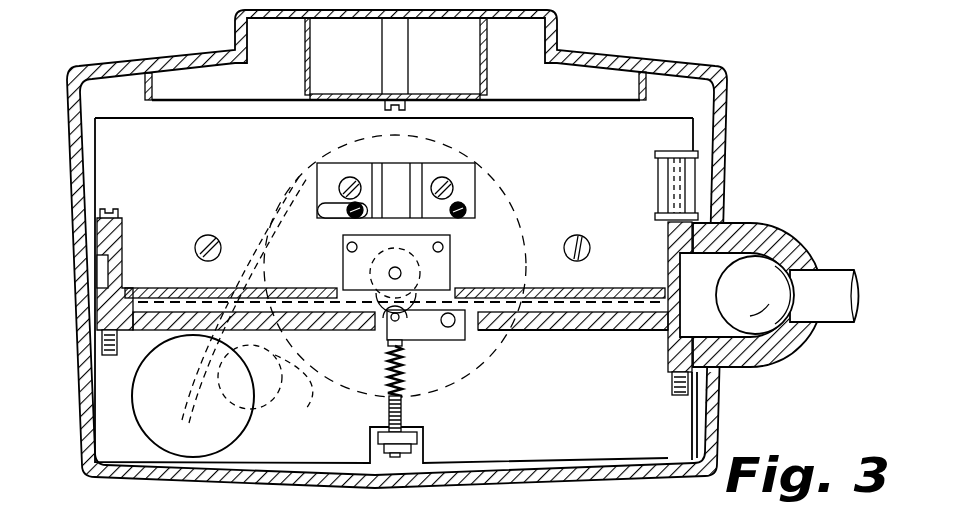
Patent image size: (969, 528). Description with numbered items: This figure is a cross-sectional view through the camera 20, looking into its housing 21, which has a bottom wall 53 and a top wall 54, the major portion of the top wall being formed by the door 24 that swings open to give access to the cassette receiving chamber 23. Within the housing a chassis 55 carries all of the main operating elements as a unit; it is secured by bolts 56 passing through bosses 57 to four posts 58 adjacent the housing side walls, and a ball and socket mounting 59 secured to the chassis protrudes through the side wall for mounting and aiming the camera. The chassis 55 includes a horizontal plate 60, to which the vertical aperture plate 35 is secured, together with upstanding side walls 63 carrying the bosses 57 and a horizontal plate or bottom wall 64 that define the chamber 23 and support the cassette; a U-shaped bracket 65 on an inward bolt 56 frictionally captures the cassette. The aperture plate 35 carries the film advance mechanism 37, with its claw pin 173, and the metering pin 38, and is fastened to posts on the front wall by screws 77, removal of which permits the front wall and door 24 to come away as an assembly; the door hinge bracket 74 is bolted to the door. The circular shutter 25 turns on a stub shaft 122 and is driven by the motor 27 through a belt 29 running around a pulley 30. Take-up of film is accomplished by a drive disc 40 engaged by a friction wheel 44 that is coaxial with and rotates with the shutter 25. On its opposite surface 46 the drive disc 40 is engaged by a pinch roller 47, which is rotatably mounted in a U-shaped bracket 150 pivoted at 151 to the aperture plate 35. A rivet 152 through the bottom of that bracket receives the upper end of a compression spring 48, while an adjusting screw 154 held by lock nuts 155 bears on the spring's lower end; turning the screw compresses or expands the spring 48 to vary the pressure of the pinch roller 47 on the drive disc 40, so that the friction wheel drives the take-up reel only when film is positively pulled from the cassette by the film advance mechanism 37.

The camera 20 is at (787, 56).
The housing 21 is at (80, 446).
The cassette receiving chamber 23 is at (615, 162).
The door 24 is at (716, 78).
The circular shutter 25 is at (492, 378).
The motor 27 is at (220, 436).
The belt 29 is at (306, 408).
The pulley 30 is at (242, 309).
The aperture plate 35 is at (541, 153).
The film advance mechanism 37 is at (335, 211).
The metering pin 38 is at (466, 217).
The drive disc 40 is at (508, 328).
The friction wheel 44 is at (425, 270).
The opposite surface 46 is at (488, 312).
The pinch roller 47 is at (405, 322).
The compression spring 48 is at (388, 371).
The bottom wall 53 is at (563, 478).
The top wall 54 is at (608, 56).
The chassis 55 is at (638, 333).
The bolts 56 is at (118, 212).
The bosses 57 is at (99, 250).
The posts 58 is at (110, 397).
The ball and socket mounting 59 is at (803, 243).
The horizontal plate 60 is at (588, 330).
The upstanding side walls 63 is at (122, 260).
The bottom wall 64 is at (603, 268).
The U-shaped bracket 65 is at (658, 178).
The door hinge bracket 74 is at (428, 97).
The screws 77 is at (218, 236).
The stub shaft 122 is at (389, 273).
The U-shaped bracket 150 is at (410, 342).
The pivot 151 is at (454, 326).
The rivet 152 is at (390, 352).
The adjusting screw 154 is at (403, 417).
The lock nuts 155 is at (415, 432).
The claw pin 173 is at (352, 216).